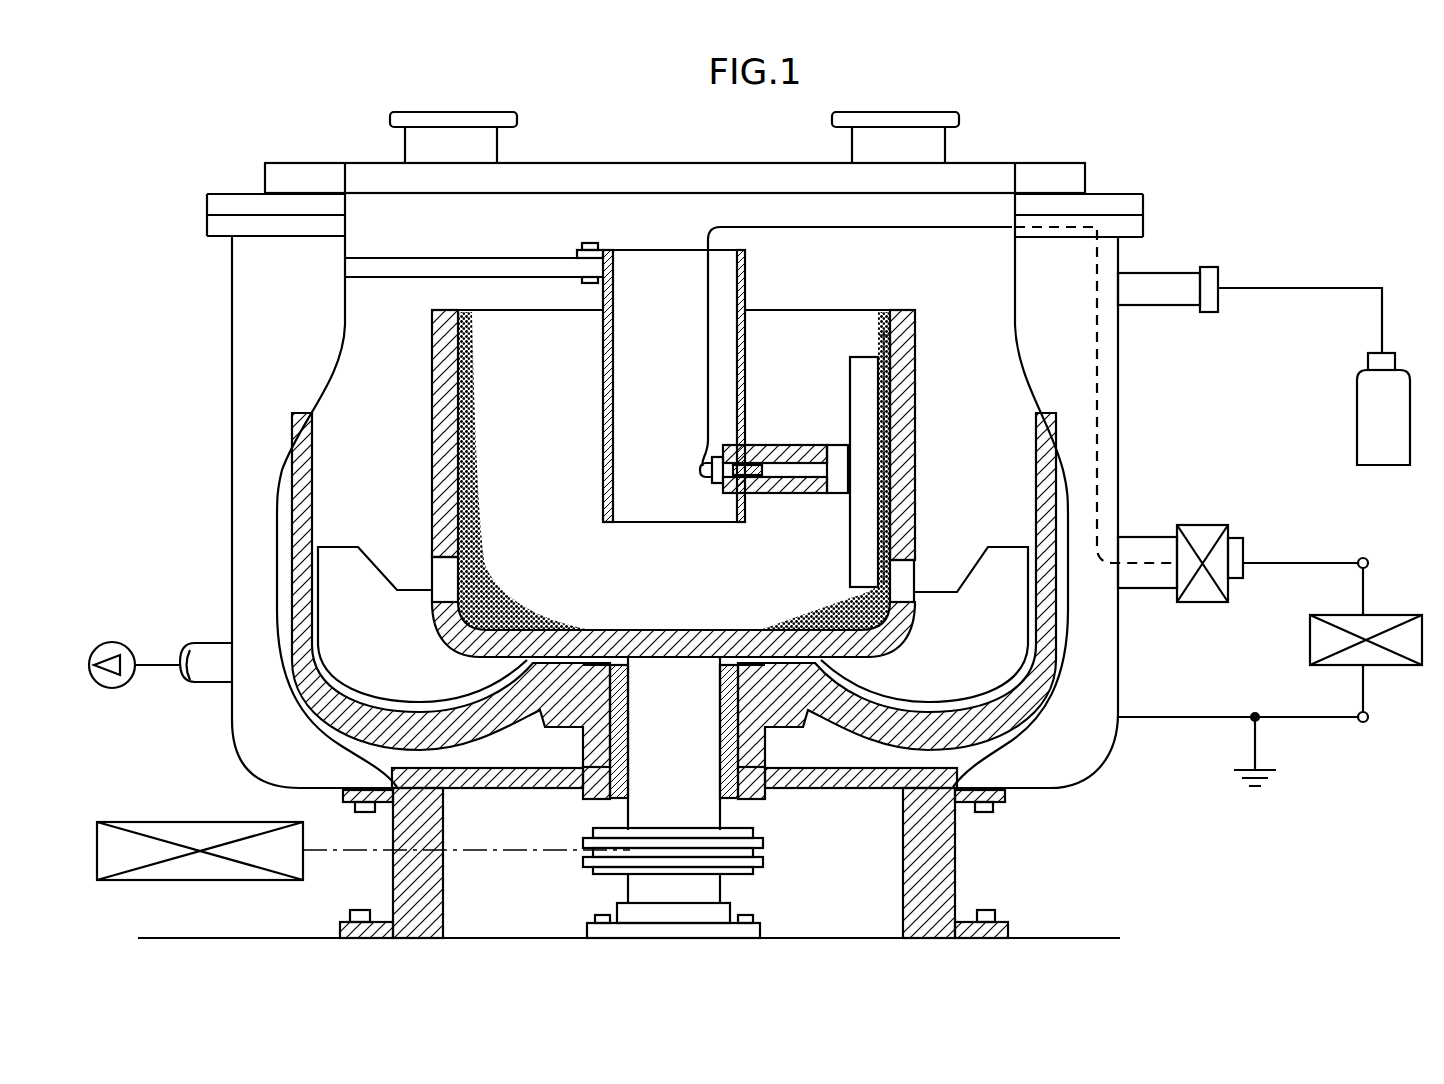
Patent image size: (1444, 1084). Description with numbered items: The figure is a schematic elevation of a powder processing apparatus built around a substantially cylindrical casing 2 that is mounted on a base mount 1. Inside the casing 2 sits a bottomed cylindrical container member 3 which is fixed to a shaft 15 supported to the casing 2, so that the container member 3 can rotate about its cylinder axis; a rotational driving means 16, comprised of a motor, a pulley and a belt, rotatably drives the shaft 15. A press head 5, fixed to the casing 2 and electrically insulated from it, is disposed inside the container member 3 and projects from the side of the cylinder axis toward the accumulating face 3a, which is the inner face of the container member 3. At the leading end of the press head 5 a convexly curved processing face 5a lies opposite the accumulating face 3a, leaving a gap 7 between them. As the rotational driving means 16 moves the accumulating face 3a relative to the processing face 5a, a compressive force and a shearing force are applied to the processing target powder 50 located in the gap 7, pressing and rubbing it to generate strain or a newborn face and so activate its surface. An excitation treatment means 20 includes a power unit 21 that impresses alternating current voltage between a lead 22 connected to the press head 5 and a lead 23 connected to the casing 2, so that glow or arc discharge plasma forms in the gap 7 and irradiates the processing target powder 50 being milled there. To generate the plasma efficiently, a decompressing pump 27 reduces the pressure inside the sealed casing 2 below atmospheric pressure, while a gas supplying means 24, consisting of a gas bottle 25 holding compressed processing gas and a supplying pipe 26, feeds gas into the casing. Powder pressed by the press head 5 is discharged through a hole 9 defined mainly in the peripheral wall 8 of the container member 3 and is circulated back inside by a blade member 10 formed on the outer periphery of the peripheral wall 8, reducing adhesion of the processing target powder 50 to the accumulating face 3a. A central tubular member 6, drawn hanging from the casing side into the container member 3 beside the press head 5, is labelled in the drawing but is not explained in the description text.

The base mount 1 is at (928, 855).
The casing 2 is at (1122, 453).
The container member 3 is at (918, 368).
The accumulating face 3a is at (886, 505).
The press head 5 is at (850, 428).
The processing face 5a is at (886, 400).
The inner tube 6 is at (745, 268).
The gap 7 is at (884, 362).
The peripheral wall 8 is at (442, 374).
The hole 9 is at (428, 571).
The blade member 10 is at (340, 588).
The shaft 15 is at (707, 813).
The rotational driving means 16 is at (210, 820).
The excitation treatment means 20 is at (1270, 639).
The power unit 21 is at (1387, 667).
The lead 22 is at (1277, 563).
The lead 23 is at (1190, 717).
The gas supplying means 24 is at (1272, 303).
The gas bottle 25 is at (1370, 423).
The supplying pipe 26 is at (1293, 288).
The decompressing pump 27 is at (108, 692).
The processing target powder 50 is at (485, 588).